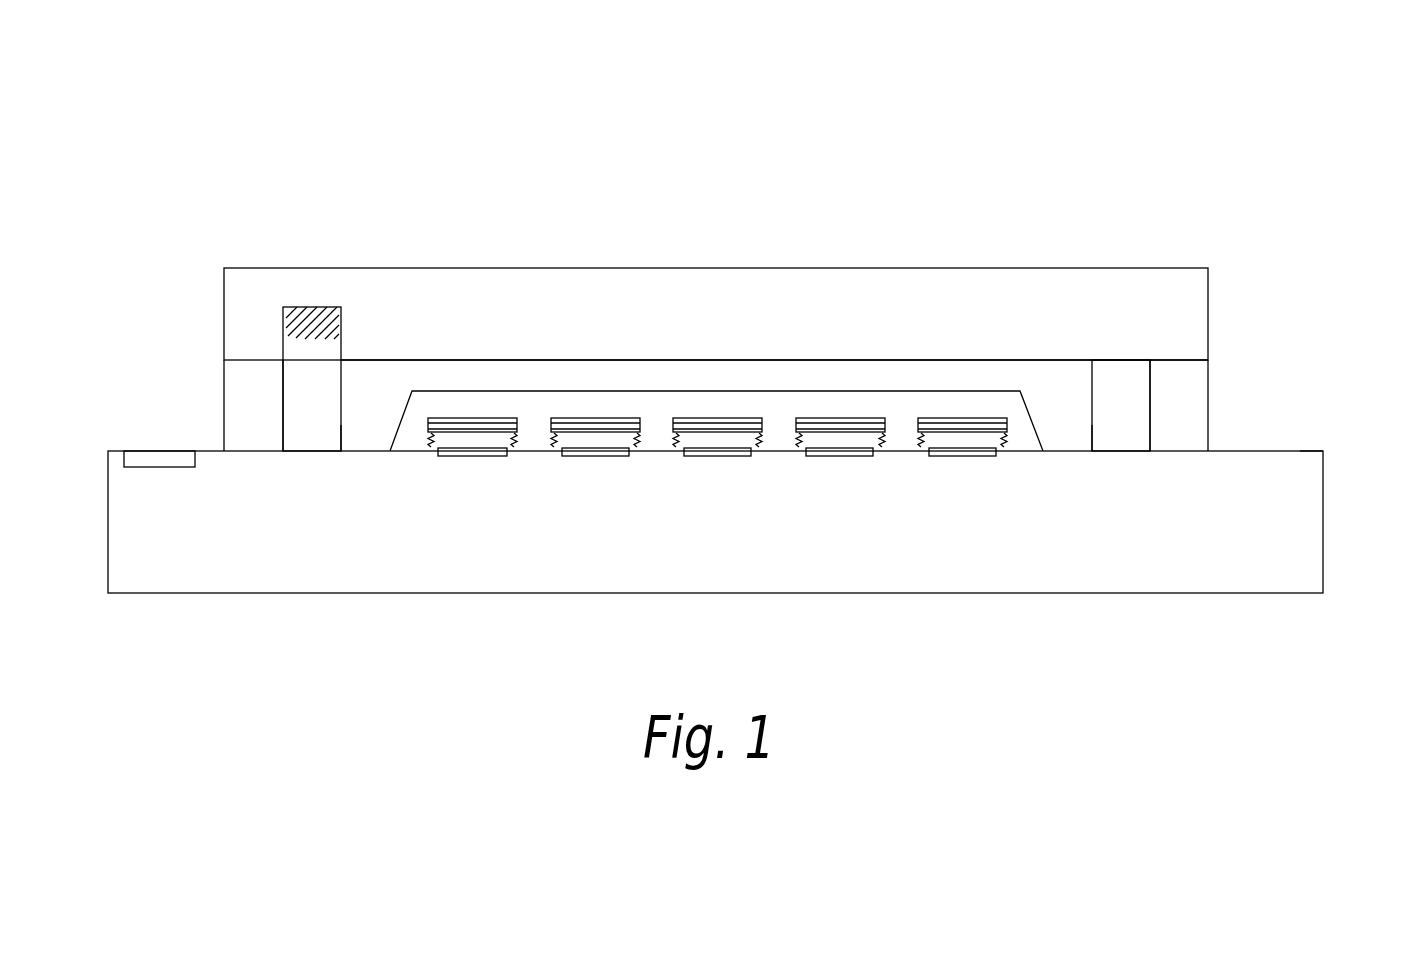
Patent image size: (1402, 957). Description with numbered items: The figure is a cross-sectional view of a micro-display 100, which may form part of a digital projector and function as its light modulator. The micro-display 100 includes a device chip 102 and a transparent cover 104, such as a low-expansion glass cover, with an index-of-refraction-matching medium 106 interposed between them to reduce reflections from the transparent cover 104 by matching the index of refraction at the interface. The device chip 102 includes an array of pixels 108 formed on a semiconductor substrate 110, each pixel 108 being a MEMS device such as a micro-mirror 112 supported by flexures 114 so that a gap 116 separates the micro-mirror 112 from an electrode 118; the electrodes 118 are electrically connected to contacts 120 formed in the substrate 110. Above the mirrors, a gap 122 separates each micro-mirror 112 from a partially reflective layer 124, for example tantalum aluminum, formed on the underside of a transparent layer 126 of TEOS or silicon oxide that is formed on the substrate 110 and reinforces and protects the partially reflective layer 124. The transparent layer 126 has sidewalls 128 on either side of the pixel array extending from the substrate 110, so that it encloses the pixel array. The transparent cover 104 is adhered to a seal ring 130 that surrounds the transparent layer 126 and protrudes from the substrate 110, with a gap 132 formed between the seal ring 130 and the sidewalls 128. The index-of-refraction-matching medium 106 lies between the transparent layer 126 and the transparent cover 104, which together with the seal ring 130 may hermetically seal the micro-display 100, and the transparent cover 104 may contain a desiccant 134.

The micro-display 100 is at (930, 183).
The device chip 102 is at (1295, 408).
The transparent cover 104 is at (892, 326).
The index-of-refraction-matching medium 106 is at (1083, 356).
The pixels 108 is at (477, 400).
The semiconductor substrate 110 is at (753, 557).
The micro-mirror 112 is at (428, 421).
The flexures 114 is at (515, 442).
The gap 116 is at (428, 443).
The electrode 118 is at (485, 452).
The contacts 120 is at (148, 452).
The gap 122 is at (601, 400).
The partially reflective layer 124 is at (733, 392).
The transparent layer 126 is at (419, 375).
The sidewalls 128 is at (341, 420).
The seal ring 130 is at (241, 410).
The gap 132 is at (311, 395).
The desiccant 134 is at (307, 322).